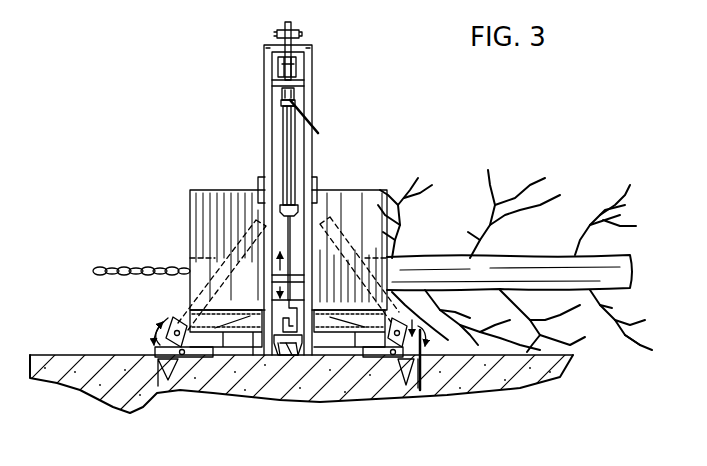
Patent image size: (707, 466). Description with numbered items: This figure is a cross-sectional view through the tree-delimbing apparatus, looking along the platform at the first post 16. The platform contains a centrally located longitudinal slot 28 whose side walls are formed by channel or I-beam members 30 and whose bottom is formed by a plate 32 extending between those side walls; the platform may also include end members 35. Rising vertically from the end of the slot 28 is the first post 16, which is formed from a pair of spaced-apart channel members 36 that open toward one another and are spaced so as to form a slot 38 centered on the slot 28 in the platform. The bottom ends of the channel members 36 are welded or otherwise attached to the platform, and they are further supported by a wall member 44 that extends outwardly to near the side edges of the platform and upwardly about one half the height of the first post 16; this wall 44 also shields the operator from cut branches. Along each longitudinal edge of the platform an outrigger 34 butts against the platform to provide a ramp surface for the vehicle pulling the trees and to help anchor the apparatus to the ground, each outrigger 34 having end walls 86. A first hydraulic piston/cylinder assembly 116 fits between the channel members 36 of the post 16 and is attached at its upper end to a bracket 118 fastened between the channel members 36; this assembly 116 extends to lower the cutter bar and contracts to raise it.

The first post 16 is at (314, 77).
The longitudinal slot 28 is at (289, 357).
The channel or I-beam members 30 is at (298, 357).
The plate 32 is at (292, 356).
The outrigger 34 is at (413, 322).
The end members 35 is at (223, 350).
The channel members 36 is at (268, 117).
The slot 38 is at (298, 55).
The wall member 44 is at (348, 190).
The end walls 86 is at (401, 348).
The first hydraulic piston/cylinder assembly 116 is at (296, 163).
The bracket 118 is at (290, 100).